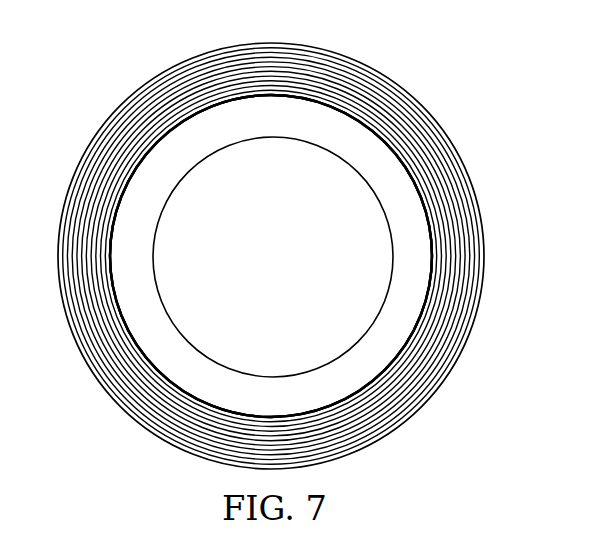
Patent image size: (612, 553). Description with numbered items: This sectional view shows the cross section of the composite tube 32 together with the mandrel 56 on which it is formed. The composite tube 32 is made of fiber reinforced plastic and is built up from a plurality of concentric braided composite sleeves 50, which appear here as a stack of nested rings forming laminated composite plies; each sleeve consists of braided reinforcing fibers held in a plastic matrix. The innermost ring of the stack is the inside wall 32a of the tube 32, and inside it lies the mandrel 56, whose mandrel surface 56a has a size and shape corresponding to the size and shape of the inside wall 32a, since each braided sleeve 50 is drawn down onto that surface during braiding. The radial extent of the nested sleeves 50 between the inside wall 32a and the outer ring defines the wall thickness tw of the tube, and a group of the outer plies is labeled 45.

The wrap layers 45 is at (143, 112).
The braided composite sleeves 50 is at (385, 105).
The composite tube 32 is at (350, 68).
The inside wall 32a is at (428, 210).
The mandrel 56 is at (146, 275).
The mandrel surface 56a is at (240, 93).
The wall thickness tw is at (190, 360).